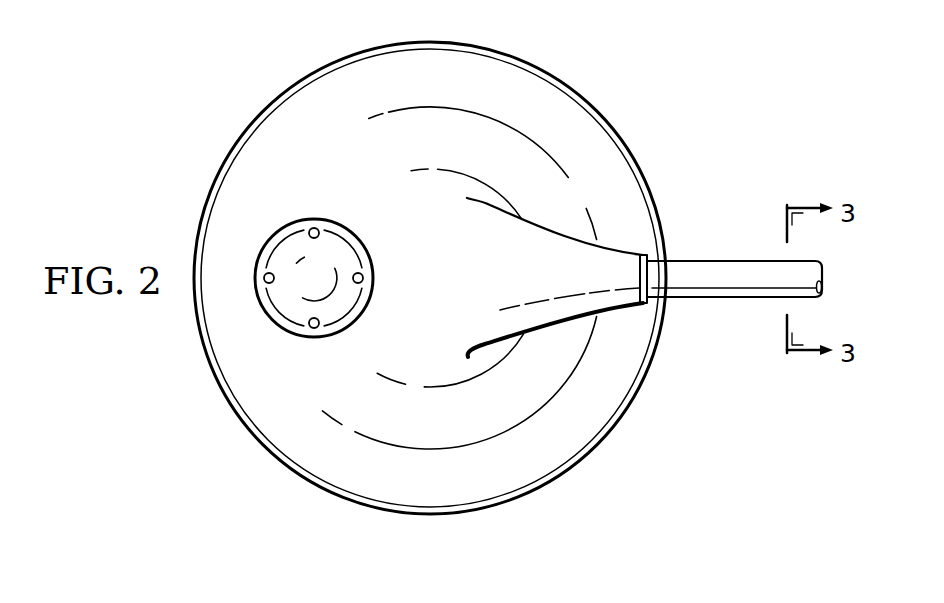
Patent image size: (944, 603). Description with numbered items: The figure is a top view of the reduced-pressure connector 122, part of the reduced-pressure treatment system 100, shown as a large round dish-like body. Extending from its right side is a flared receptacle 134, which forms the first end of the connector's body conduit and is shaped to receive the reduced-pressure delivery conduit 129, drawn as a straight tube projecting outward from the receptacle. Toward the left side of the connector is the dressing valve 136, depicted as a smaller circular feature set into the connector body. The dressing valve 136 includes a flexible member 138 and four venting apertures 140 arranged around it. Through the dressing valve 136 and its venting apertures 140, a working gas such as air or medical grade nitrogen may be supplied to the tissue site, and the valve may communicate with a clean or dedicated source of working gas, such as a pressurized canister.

The reduced-pressure treatment system 100 is at (278, 63).
The reduced-pressure connector 122 is at (603, 116).
The reduced-pressure delivery conduit 129 is at (712, 261).
The receptacle 134 is at (547, 238).
The dressing valve 136 is at (373, 261).
The flexible member 138 is at (297, 314).
The venting apertures 140 is at (314, 228).